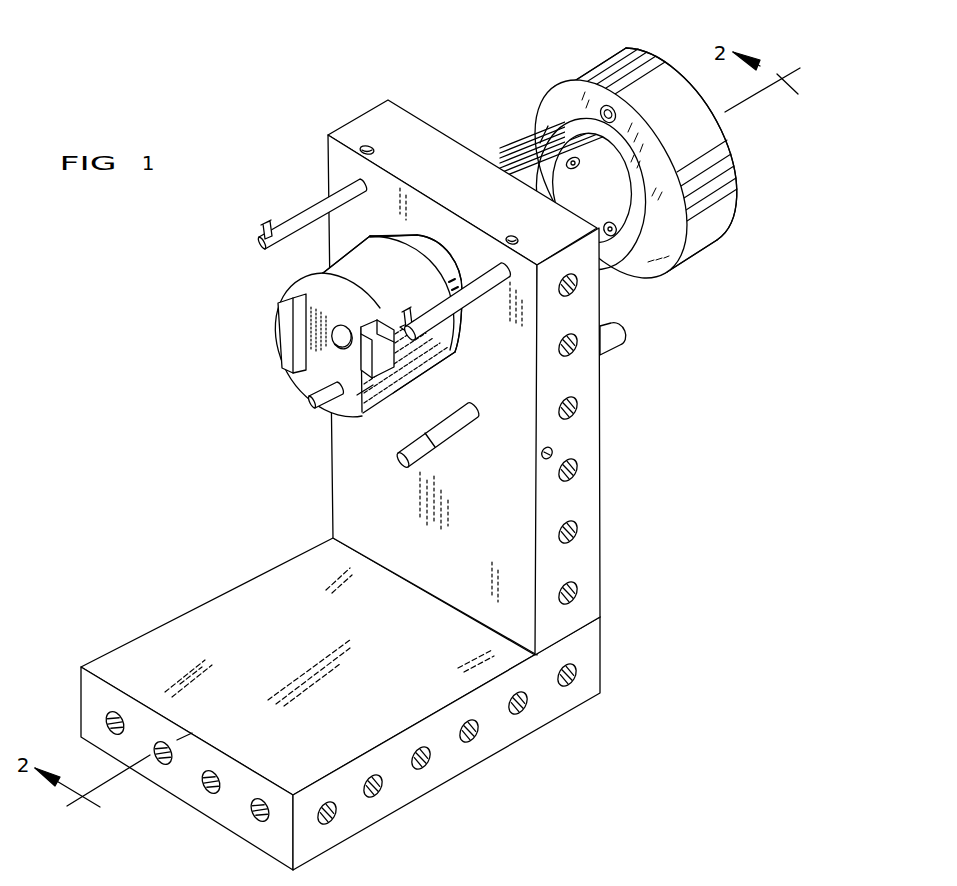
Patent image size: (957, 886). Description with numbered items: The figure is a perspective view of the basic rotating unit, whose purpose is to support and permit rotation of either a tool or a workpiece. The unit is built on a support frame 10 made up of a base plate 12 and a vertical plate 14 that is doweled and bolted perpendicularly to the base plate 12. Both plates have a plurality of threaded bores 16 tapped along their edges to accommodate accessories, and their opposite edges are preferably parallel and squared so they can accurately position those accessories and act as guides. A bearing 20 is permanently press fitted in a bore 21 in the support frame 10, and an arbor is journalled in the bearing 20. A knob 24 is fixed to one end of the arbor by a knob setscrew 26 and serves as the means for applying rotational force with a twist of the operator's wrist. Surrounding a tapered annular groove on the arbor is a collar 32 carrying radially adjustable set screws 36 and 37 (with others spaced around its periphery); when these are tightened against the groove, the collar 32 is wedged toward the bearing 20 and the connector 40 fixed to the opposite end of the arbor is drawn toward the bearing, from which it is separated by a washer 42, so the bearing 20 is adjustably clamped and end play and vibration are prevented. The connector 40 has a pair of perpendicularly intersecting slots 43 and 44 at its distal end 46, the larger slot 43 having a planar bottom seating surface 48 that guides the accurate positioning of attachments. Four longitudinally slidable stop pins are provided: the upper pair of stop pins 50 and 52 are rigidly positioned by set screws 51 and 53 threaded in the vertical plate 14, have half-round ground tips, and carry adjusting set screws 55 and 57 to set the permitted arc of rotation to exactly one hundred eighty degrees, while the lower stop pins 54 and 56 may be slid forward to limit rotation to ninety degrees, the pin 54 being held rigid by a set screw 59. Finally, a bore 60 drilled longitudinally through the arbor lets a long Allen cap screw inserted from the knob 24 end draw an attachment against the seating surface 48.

The support frame 10 is at (612, 481).
The base plate 12 is at (495, 733).
The vertical plate 14 is at (580, 570).
The threaded bores 16 is at (373, 795).
The bearing 20 is at (433, 247).
The bore 21 is at (418, 240).
The knob 24 is at (675, 97).
The knob setscrew 26 is at (603, 109).
The collar 32 is at (532, 150).
The set screw 36 is at (540, 143).
The set screw 37 is at (611, 238).
The connector 40 is at (262, 327).
The washer 42 is at (425, 245).
The slot 43 is at (303, 358).
The slot 44 is at (290, 307).
The distal end 46 is at (285, 352).
The planar bottom seating surface 48 is at (333, 372).
The slidable stop pin 50 is at (297, 223).
The set screw 51 is at (365, 147).
The slidable stop pin 52 is at (483, 288).
The set screw 53 is at (509, 236).
The slidable stop pin 54 is at (460, 427).
The adjusting set screw 55 is at (260, 228).
The slidable stop pin 56 is at (313, 410).
The adjusting set screw 57 is at (406, 308).
The set screw 59 is at (553, 450).
The bore 60 is at (342, 400).